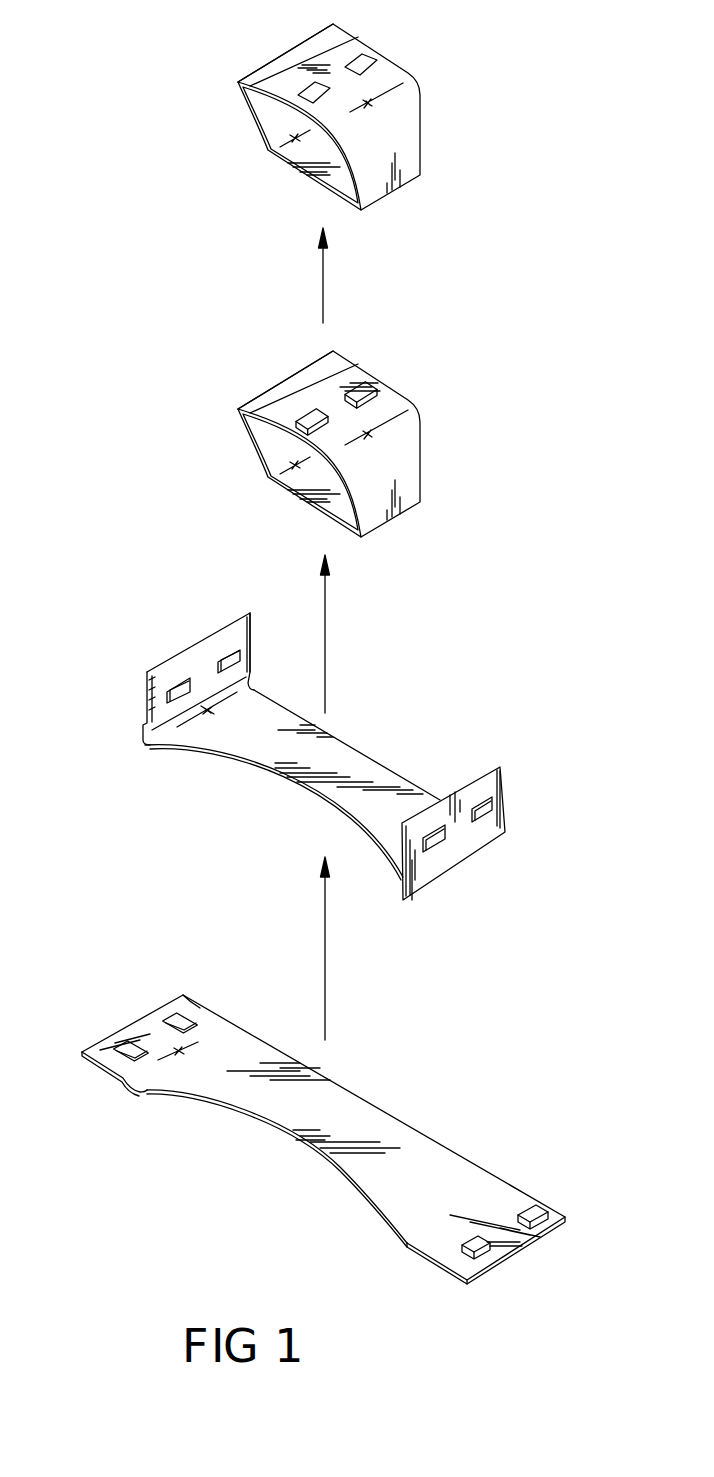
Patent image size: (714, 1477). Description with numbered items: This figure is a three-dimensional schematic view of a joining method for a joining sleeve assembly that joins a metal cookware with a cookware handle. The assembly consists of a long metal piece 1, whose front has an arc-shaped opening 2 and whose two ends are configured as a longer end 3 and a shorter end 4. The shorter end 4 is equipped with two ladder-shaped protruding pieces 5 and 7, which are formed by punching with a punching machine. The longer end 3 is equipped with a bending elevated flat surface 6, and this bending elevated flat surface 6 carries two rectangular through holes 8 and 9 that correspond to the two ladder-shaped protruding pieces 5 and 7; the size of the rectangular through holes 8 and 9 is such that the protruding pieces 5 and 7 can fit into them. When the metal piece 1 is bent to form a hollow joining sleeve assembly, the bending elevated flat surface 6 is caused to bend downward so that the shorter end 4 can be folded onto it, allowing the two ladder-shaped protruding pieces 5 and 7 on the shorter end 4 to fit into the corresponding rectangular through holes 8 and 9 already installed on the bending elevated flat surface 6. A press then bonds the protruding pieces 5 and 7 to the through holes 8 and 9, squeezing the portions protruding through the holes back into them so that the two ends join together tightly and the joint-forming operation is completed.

The long metal piece 1 is at (415, 148).
The arc-shaped opening 2 is at (289, 1157).
The longer end 3 is at (262, 73).
The shorter end 4 is at (383, 53).
The ladder-shaped protruding piece 5 is at (300, 420).
The bending elevated flat surface 6 is at (278, 112).
The ladder-shaped protruding piece 7 is at (365, 378).
The rectangular through hole 8 is at (177, 684).
The rectangular through hole 9 is at (227, 653).